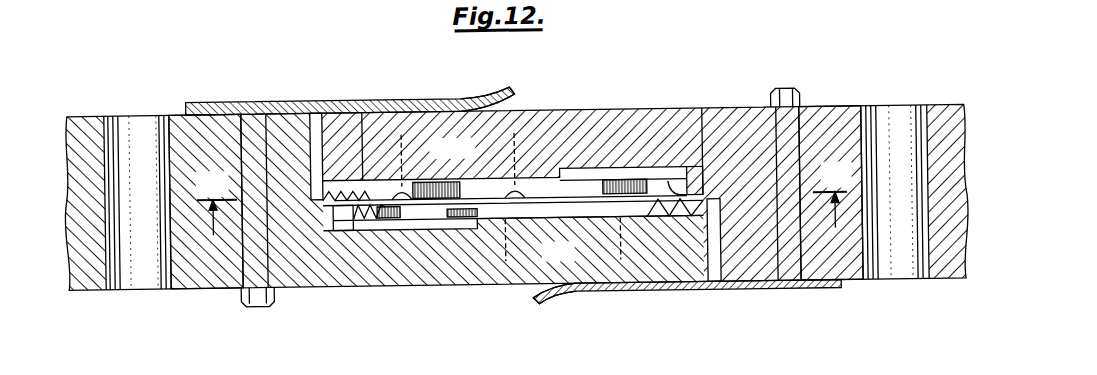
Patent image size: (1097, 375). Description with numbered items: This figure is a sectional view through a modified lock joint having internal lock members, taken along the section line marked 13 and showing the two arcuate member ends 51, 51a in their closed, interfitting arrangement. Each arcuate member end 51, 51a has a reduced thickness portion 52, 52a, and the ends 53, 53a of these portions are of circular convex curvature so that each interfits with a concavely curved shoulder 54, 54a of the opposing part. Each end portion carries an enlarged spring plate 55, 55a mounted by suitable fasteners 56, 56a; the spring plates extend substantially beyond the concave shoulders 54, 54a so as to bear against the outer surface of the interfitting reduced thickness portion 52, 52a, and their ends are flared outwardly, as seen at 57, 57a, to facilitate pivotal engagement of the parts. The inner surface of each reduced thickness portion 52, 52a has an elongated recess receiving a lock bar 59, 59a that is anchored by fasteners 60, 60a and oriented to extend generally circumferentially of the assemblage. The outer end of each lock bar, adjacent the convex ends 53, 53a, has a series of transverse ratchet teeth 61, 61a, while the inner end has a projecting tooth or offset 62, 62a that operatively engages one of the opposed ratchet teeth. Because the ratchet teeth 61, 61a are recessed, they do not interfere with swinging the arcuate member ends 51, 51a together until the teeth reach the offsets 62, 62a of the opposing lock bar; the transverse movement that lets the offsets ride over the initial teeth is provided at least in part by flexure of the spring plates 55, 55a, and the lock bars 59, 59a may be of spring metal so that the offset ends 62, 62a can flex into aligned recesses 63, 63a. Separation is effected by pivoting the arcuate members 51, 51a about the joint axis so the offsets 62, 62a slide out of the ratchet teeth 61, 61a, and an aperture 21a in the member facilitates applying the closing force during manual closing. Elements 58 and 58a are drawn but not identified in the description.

The section line 13- 13 is at (526, 200).
The aperture 21a is at (135, 118).
The arcuate member end 51 is at (205, 133).
The arcuate member end 51a is at (846, 91).
The reduced thickness portion 52 is at (478, 284).
The reduced thickness portion 52a is at (593, 113).
The end of circular convex curvature 53 is at (712, 284).
The end of circular convex curvature 53a is at (315, 132).
The concavely curved shoulder 54 is at (281, 140).
The concavely curved shoulder 54a is at (724, 258).
The spring plate 55 is at (400, 98).
The spring plate 55a is at (826, 294).
The fastener 56 is at (253, 304).
The fastener 56a is at (786, 94).
The flared end 57 is at (500, 96).
The flared end 57a is at (545, 306).
The retaining bar 58 is at (333, 202).
The retaining bar 58a is at (701, 169).
The lock bar 59 is at (405, 228).
The lock bar 59a is at (617, 183).
The fastener 60 is at (596, 249).
The fastener 60a is at (497, 143).
The ratchet teeth 61 is at (650, 217).
The ratchet teeth 61a is at (368, 138).
The projecting tooth or offset 62 is at (345, 230).
The projecting tooth or offset 62a is at (680, 199).
The aligned recess 63 is at (380, 228).
The aligned recess 63a is at (568, 173).